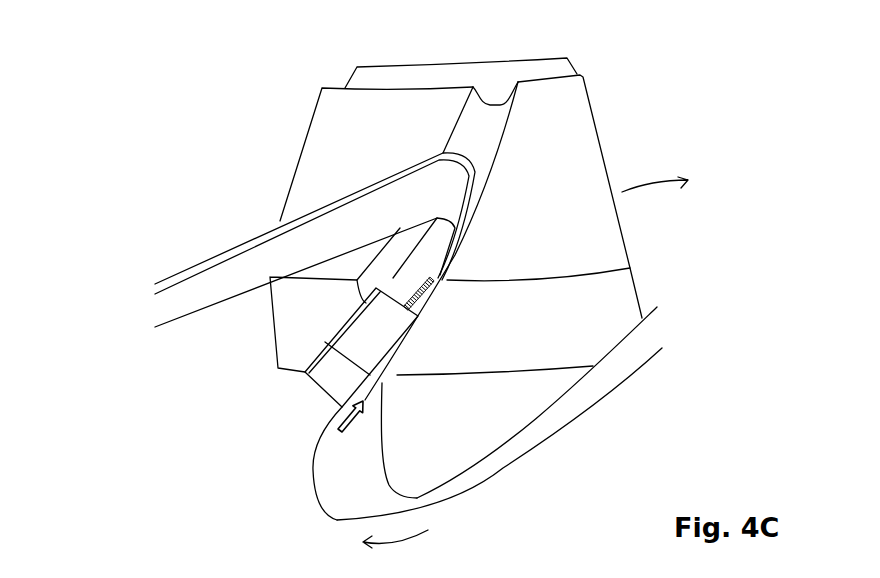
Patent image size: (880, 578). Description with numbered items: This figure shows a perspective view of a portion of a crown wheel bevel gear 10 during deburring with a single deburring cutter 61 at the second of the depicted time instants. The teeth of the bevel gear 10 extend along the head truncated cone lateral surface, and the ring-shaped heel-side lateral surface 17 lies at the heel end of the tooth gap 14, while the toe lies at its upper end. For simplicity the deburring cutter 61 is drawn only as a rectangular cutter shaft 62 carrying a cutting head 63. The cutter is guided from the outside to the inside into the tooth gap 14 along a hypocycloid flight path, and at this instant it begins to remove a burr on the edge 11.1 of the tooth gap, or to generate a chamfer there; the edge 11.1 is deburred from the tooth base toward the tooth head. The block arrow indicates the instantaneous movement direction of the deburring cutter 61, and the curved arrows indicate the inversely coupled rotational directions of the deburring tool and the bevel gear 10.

The bevel gear 10 is at (73, 53).
The tooth gap 14 is at (507, 70).
The heel-side lateral surface 17 is at (543, 352).
The deburring cutter 61 is at (388, 395).
The cutter shaft 62 is at (307, 365).
The cutting head 63 is at (398, 297).
The edge 11.1 is at (415, 304).